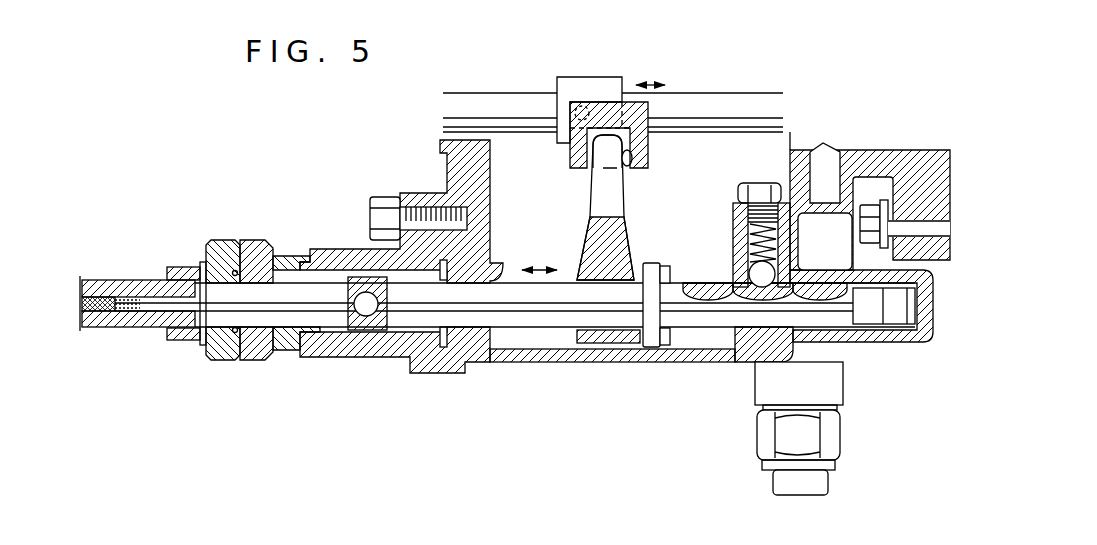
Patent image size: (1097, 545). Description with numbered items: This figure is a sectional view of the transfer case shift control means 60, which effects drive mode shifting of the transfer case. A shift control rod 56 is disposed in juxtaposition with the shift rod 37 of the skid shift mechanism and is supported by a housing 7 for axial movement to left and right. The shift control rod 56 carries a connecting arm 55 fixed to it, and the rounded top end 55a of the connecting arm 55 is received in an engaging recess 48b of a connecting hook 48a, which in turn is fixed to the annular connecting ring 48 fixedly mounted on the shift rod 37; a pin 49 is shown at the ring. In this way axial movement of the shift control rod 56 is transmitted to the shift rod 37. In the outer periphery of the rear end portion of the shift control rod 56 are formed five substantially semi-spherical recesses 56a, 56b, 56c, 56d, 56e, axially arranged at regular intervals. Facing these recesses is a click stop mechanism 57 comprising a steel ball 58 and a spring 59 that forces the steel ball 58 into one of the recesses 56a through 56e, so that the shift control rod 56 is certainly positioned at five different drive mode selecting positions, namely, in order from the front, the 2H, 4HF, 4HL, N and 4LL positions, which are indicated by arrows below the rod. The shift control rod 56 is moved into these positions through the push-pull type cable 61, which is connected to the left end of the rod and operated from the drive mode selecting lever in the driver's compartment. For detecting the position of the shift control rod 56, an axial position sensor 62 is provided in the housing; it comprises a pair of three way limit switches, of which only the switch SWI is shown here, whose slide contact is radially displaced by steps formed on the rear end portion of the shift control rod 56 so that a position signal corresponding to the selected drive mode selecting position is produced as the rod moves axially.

The transfer case housing 7 is at (452, 374).
The shift rod 37 is at (770, 93).
The annular connecting ring 48 is at (606, 76).
The connecting hook 48a is at (648, 112).
The engaging recess 48b is at (632, 168).
The pin 49 is at (568, 104).
The connecting arm 55 is at (590, 206).
The rounded top end 55a is at (592, 158).
The shift control rod 56 is at (520, 340).
The semi-spherical recess 56a is at (700, 298).
The semi-spherical recess 56b is at (722, 303).
The semi-spherical recess 56c is at (752, 300).
The semi-spherical recess 56d is at (815, 298).
The semi-spherical recess 56e is at (816, 290).
The click stop mechanism 57 is at (724, 240).
The steel ball 58 is at (737, 262).
The spring 59 is at (737, 212).
The transfer case shift control means 60 is at (561, 420).
The push-pull type cable 61 is at (101, 305).
The axial position sensor 62 is at (742, 433).
The limit switch SWI is at (780, 487).
The 2W-H drive mode selecting position 2H is at (797, 347).
The 4W-DF-H drive mode selecting position 4HF is at (823, 347).
The 4W-DL-H drive mode selecting position 4HL is at (853, 347).
The neutral mode selecting position N is at (880, 347).
The 4W-DL-L drive mode selecting position 4LL is at (907, 347).